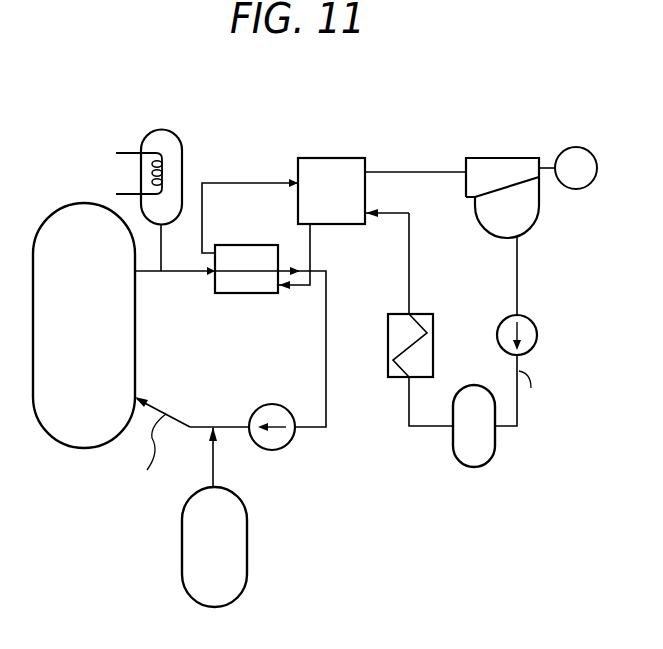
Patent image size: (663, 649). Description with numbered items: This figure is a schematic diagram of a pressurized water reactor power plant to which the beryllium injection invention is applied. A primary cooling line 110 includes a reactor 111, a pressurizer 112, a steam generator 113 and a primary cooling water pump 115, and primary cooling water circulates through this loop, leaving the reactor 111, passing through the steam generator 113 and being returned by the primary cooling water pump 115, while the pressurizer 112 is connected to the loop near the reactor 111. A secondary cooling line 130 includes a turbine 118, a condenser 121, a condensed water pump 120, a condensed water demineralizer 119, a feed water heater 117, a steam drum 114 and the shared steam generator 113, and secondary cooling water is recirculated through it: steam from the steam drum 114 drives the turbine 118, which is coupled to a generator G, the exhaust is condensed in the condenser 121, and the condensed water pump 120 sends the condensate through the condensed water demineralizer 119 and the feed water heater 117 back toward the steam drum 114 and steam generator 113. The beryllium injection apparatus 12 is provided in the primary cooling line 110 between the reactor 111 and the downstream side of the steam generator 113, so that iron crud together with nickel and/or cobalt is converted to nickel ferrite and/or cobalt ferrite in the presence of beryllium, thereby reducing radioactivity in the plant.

The reactor 111 is at (84, 203).
The pressurizer 112 is at (162, 129).
The steam generator 113 is at (246, 245).
The steam drum 114 is at (335, 158).
The primary cooling water pump 115 is at (272, 404).
The feed water heater 117 is at (433, 341).
The turbine 118 is at (503, 158).
The condensed water demineralizer 119 is at (473, 468).
The condensed water pump 120 is at (537, 335).
The condenser 121 is at (539, 207).
The secondary cooling line 130 is at (505, 428).
The primary cooling line 110 is at (195, 425).
The beryllium injection apparatus 12 is at (247, 545).
The generator G is at (576, 168).